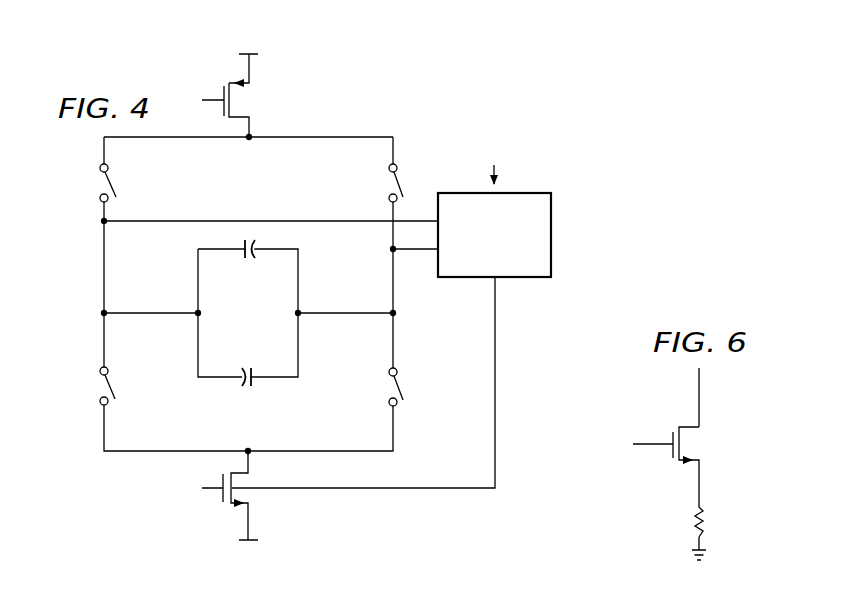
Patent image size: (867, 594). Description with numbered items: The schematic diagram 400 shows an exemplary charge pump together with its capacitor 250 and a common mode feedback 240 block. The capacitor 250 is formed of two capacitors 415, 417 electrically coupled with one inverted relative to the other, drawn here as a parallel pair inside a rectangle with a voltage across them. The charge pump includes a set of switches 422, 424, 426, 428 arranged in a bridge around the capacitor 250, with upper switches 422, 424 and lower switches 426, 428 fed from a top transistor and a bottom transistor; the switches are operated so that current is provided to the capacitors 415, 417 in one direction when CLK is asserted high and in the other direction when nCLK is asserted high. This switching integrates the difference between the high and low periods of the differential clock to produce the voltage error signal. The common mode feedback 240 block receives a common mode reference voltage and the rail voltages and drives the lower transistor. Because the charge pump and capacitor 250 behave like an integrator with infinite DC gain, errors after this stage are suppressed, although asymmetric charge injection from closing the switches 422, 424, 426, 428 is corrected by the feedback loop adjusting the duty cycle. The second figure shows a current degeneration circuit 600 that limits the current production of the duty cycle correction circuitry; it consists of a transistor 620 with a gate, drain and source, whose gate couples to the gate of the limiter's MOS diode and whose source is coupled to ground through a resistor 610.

In FIG. 4, the schematic diagram 400 is at (384, 66).
In FIG. 4, the switch 422 is at (101, 183).
In FIG. 4, the switch 424 is at (389, 183).
In FIG. 4, the switch 426 is at (101, 388).
In FIG. 4, the switch 428 is at (390, 388).
In FIG. 4, the capacitor 250 is at (183, 270).
In FIG. 4, the capacitor 415 is at (254, 261).
In FIG. 4, the capacitor 417 is at (246, 366).
In FIG. 4, the common mode feedback 240 is at (509, 278).
In FIG. 6, the current degeneration circuit 600 is at (637, 516).
In FIG. 6, the resistor 610 is at (706, 520).
In FIG. 6, the transistor 620 is at (670, 452).